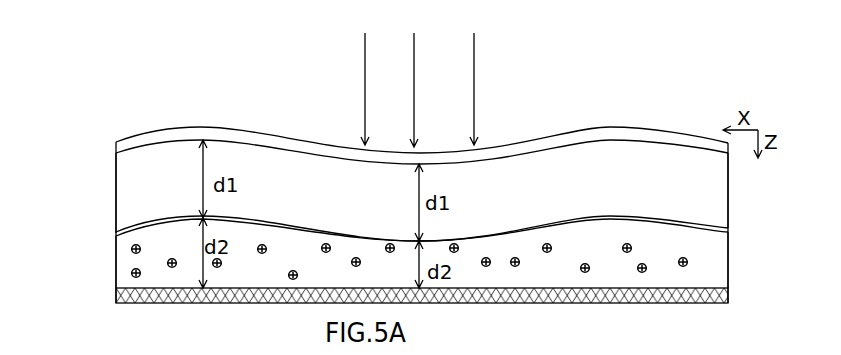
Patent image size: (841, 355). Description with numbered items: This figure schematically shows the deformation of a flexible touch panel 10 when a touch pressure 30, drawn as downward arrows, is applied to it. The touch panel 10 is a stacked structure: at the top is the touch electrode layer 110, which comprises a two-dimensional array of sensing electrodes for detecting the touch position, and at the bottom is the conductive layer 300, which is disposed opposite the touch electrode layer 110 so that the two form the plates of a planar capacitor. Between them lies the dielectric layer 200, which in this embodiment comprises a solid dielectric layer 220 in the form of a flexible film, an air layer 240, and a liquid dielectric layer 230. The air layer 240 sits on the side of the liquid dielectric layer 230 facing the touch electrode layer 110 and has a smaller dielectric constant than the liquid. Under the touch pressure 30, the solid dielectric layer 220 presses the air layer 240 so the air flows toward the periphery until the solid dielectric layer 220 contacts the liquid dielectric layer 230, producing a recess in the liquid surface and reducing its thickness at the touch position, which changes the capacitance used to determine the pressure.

The touch panel 10 is at (365, 196).
The touch pressure 30 is at (365, 118).
The touch electrode layer 110 is at (163, 135).
The dielectric layer 200 is at (43, 168).
The solid dielectric layer 220 is at (157, 183).
The air layer 240 is at (152, 223).
The liquid dielectric layer 230 is at (155, 248).
The conductive layer 300 is at (116, 297).